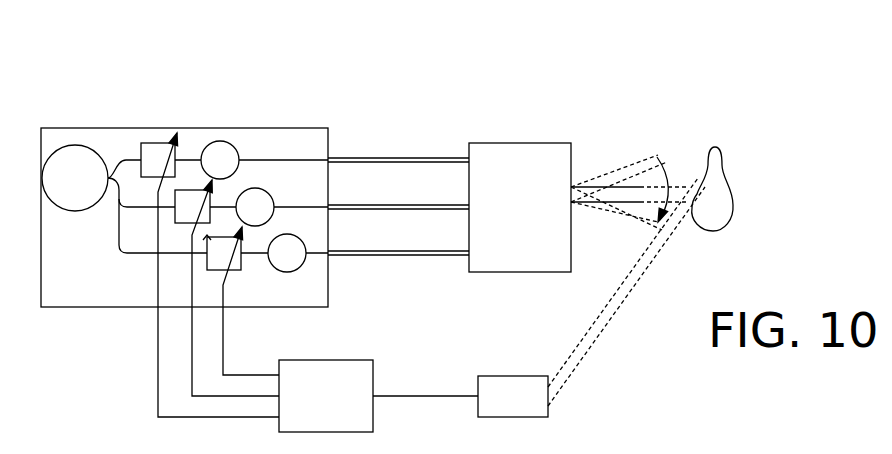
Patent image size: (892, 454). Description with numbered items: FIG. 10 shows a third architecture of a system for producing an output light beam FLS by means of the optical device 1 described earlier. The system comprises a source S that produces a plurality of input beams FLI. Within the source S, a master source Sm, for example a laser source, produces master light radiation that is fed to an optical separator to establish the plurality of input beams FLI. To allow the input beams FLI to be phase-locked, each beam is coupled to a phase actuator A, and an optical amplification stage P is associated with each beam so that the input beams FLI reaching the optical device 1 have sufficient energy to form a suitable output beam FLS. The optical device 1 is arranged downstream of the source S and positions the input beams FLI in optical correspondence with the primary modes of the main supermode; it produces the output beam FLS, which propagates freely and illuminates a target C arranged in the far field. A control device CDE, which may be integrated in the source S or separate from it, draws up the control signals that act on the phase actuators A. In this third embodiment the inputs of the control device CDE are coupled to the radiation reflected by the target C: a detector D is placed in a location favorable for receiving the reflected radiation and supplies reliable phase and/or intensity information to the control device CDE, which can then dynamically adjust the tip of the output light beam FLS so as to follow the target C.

The source S is at (115, 128).
The master source Sm is at (75, 178).
The phase actuator A is at (191, 206).
The optical amplification stage P is at (253, 206).
The input beams FLI is at (382, 138).
The optical device 1 is at (520, 132).
The output light beam FLS is at (645, 146).
The control device CDE is at (326, 396).
The detector D is at (513, 396).
The target C is at (712, 189).